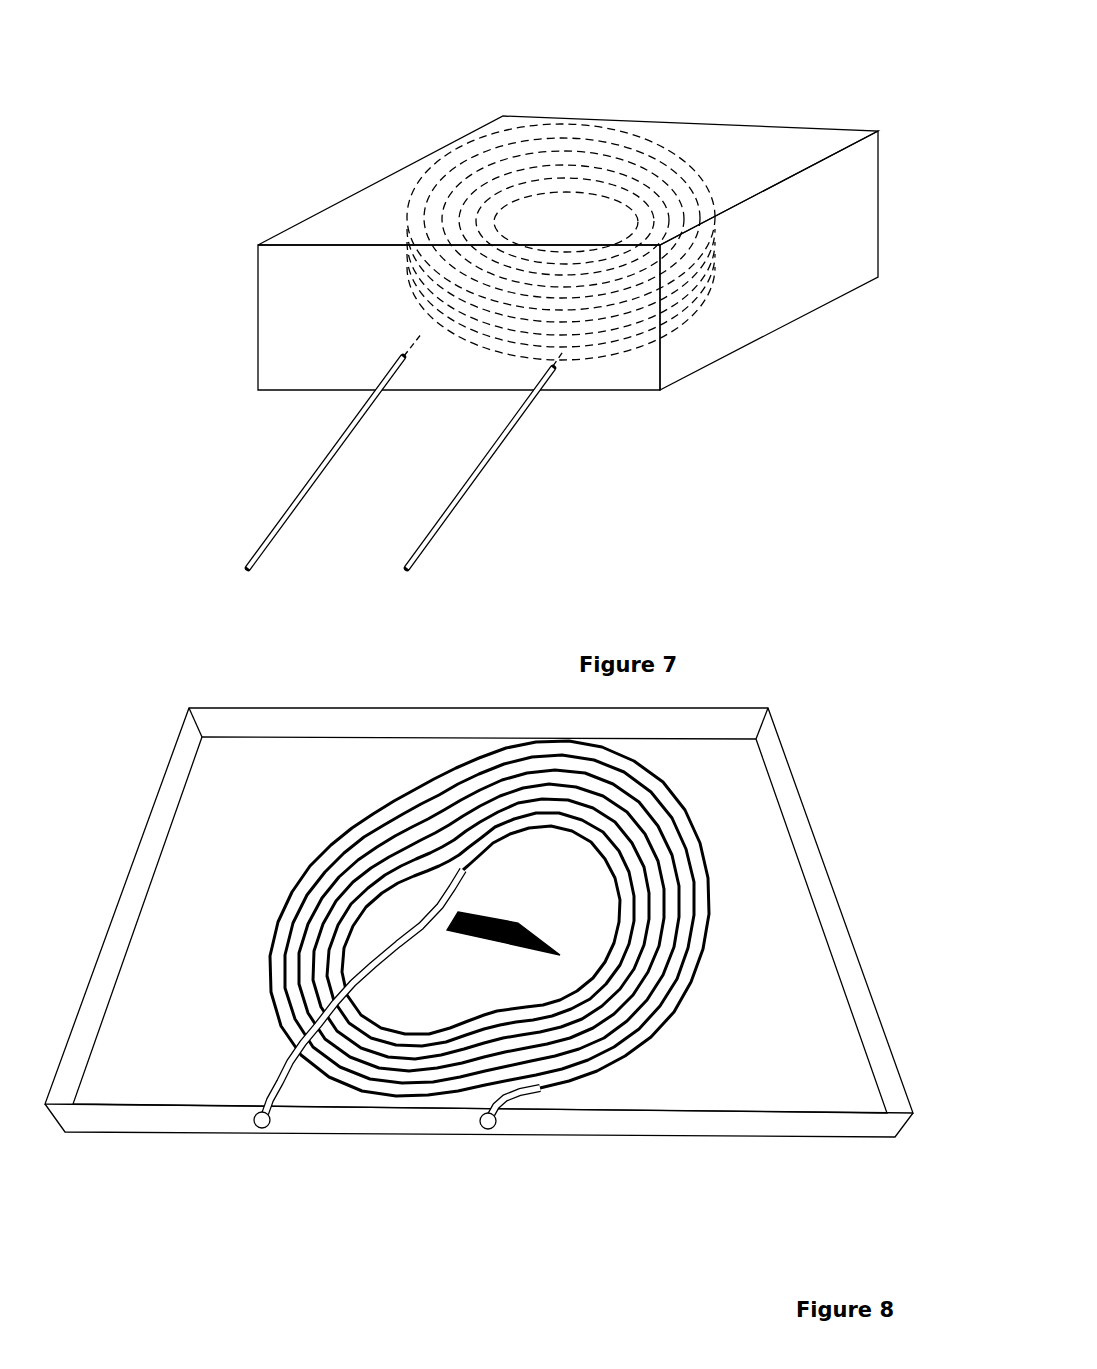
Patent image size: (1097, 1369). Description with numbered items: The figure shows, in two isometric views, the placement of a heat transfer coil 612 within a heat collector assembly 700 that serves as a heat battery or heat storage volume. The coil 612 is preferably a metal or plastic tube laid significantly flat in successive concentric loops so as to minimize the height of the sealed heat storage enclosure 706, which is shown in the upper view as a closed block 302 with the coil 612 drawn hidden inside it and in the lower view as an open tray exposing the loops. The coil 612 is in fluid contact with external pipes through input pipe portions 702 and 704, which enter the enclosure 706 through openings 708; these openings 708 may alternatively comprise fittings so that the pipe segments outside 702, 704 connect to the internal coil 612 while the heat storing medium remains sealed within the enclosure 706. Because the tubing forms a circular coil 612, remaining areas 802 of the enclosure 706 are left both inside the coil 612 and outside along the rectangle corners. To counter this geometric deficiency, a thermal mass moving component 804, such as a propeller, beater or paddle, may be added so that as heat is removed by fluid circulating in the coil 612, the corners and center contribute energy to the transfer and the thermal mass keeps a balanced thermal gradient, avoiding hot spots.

In FIG. 7, the encapsulated coil assembly 700 is at (555, 288).
In FIG. 7, the encapsulation housing 302 is at (383, 185).
In FIG. 7, the coil 612 is at (593, 143).
In FIG. 8, the coil 612 is at (636, 802).
In FIG. 7, the heat storage enclosure 706 is at (763, 289).
In FIG. 7, the openings 708 is at (536, 367).
In FIG. 8, the openings 708 is at (482, 1129).
In FIG. 7, the input pipe portion 702 is at (250, 540).
In FIG. 8, the input pipe portion 702 is at (285, 1085).
In FIG. 7, the input pipe portion 704 is at (437, 533).
In FIG. 8, the input pipe portion 704 is at (532, 1098).
In FIG. 8, the remaining areas 802 is at (741, 1020).
In FIG. 8, the thermal mass moving component 804 is at (527, 911).